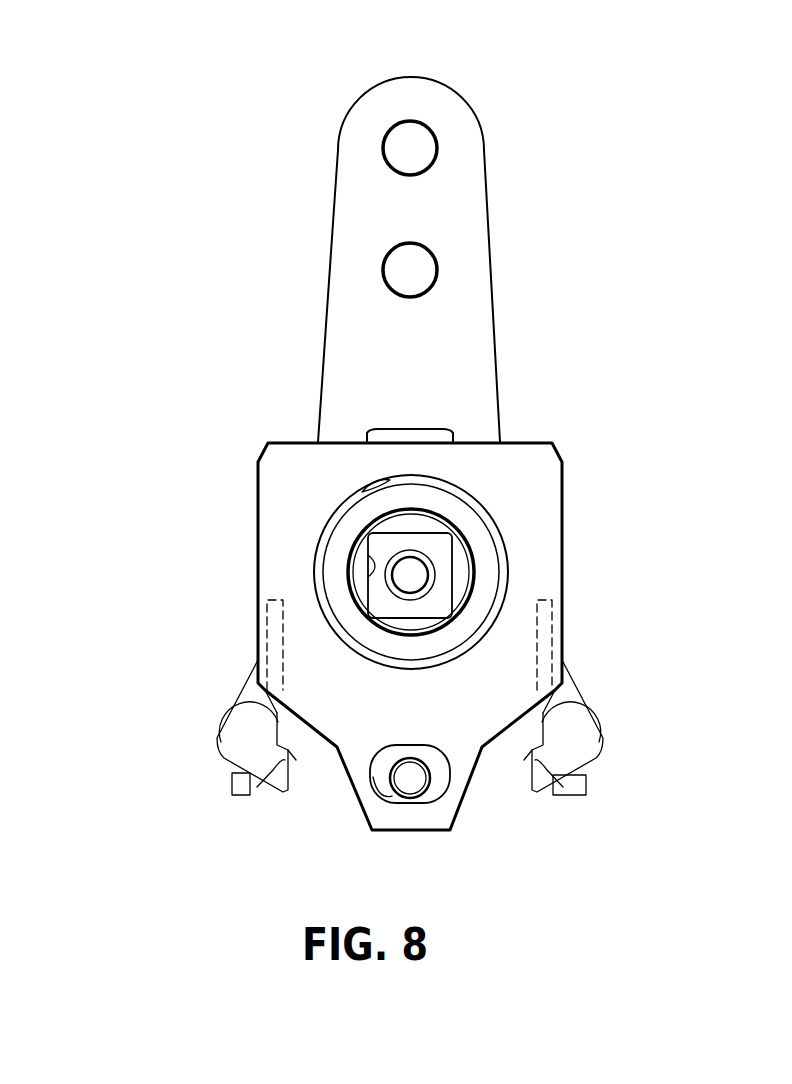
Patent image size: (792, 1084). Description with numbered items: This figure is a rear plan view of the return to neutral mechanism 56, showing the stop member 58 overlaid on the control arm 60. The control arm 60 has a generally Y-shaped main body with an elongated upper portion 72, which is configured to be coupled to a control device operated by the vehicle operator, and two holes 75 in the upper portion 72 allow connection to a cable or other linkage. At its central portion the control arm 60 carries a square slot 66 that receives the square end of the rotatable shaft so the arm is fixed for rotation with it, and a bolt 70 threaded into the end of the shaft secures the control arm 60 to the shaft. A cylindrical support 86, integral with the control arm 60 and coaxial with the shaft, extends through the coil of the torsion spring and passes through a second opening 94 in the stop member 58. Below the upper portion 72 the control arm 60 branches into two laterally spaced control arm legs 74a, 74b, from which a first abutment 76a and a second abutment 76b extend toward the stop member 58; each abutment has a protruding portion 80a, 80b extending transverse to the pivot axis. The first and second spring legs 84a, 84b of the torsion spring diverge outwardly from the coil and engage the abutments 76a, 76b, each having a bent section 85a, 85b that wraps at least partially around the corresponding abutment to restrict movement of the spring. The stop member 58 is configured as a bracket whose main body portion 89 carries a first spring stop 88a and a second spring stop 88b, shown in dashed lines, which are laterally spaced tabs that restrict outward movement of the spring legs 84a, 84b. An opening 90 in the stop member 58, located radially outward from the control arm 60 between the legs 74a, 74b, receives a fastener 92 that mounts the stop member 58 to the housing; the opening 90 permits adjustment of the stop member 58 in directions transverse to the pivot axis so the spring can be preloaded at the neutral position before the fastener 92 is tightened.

The return to neutral mechanism 56 is at (316, 86).
The control arm 60 is at (474, 109).
The elongated upper portion 72 is at (475, 310).
The holes 75 is at (410, 162).
The stop member 58 is at (550, 442).
The main body portion 89 is at (407, 432).
The cylindrical support 86 is at (360, 518).
The second opening 94 is at (383, 483).
The square slot 66 is at (367, 583).
The bolt 70 is at (410, 575).
The first spring stop 88a is at (278, 630).
The second spring stop 88b is at (552, 632).
The first control arm leg 74a is at (256, 688).
The second control arm leg 74b is at (567, 697).
The first abutment 76a is at (247, 723).
The second abutment 76b is at (578, 735).
The first spring leg 84a is at (290, 745).
The second spring leg 84b is at (530, 745).
The bent section 85a is at (232, 785).
The bent section 85b is at (588, 782).
The protruding portion 80a is at (272, 770).
The protruding portion 80b is at (553, 768).
The opening 90 is at (392, 797).
The fastener 92 is at (408, 783).